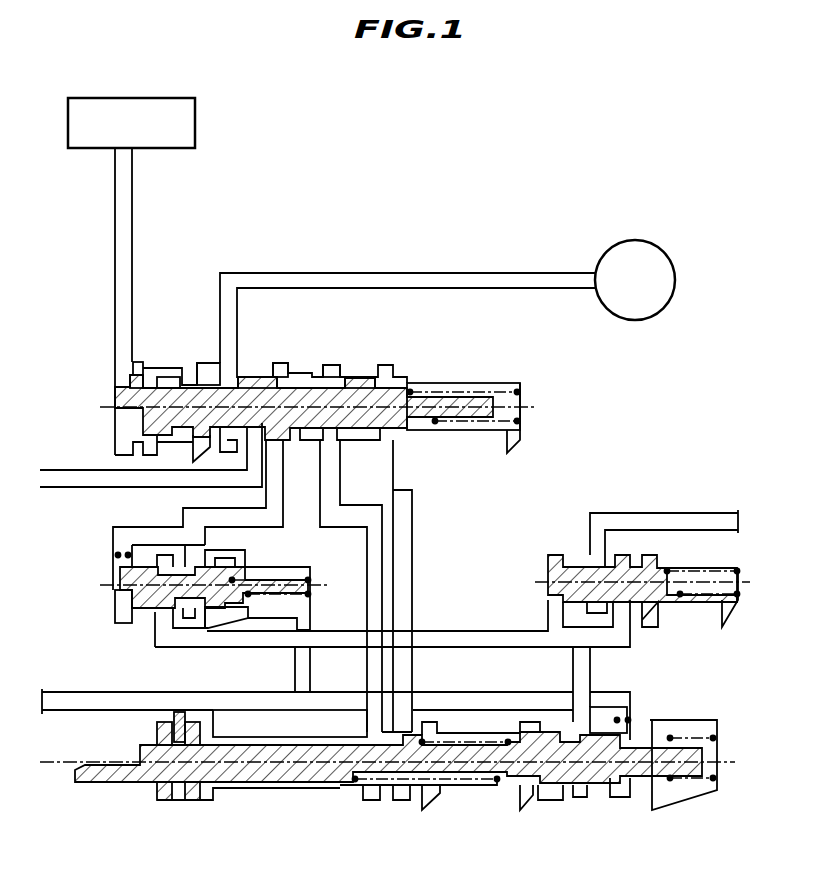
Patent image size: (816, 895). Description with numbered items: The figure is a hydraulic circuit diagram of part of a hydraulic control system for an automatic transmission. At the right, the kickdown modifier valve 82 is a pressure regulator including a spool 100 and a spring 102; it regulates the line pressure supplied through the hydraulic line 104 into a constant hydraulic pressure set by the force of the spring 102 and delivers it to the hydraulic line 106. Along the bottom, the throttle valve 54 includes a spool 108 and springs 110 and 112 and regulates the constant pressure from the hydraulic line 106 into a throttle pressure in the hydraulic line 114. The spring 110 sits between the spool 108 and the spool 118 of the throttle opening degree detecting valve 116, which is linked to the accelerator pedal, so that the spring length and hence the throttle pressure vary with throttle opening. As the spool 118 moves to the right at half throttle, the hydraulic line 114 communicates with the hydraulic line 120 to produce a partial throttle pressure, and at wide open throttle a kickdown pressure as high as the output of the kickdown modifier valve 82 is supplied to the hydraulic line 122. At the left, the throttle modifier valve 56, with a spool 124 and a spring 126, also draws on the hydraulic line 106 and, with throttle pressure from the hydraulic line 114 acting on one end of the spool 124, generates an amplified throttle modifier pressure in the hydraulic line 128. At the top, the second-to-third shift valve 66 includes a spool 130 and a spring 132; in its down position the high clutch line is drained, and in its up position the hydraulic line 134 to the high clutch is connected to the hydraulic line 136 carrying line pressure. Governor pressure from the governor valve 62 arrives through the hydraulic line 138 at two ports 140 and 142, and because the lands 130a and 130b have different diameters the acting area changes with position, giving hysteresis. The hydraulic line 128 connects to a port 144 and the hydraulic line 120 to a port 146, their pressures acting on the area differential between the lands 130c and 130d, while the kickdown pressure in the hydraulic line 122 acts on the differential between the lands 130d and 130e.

The governor valve 62 is at (157, 98).
The hydraulic line 138 is at (113, 258).
The port 140 is at (128, 380).
The hydraulic line 134 is at (413, 273).
The 2-3 shift valve 66 is at (417, 321).
The spool 130 is at (302, 385).
The land 130a is at (143, 362).
The port 142 is at (167, 375).
The land 130b is at (203, 364).
The land 130c is at (254, 376).
The port 144 is at (282, 363).
The port 146 is at (336, 365).
The land 130d is at (370, 362).
The land 130e is at (400, 385).
The spring 132 is at (516, 383).
The hydraulic line 136 is at (78, 470).
The hydraulic line 128 is at (150, 530).
The hydraulic line 120 is at (340, 485).
The hydraulic line 122 is at (412, 675).
The hydraulic line 106 is at (155, 640).
The throttle modifier valve 56 is at (103, 559).
The spool 124 is at (115, 609).
The spring 126 is at (305, 578).
The kickdown modifier valve 82 is at (528, 553).
The spool 100 is at (571, 567).
The spring 102 is at (735, 570).
The hydraulic line 104 is at (650, 513).
The hydraulic line 114 is at (312, 622).
The throttle opening degree detecting valve 116 is at (351, 808).
The spool 118 is at (290, 780).
The spring 110 is at (498, 790).
The spool 108 is at (606, 798).
The throttle valve 54 is at (660, 708).
The spring 112 is at (713, 738).